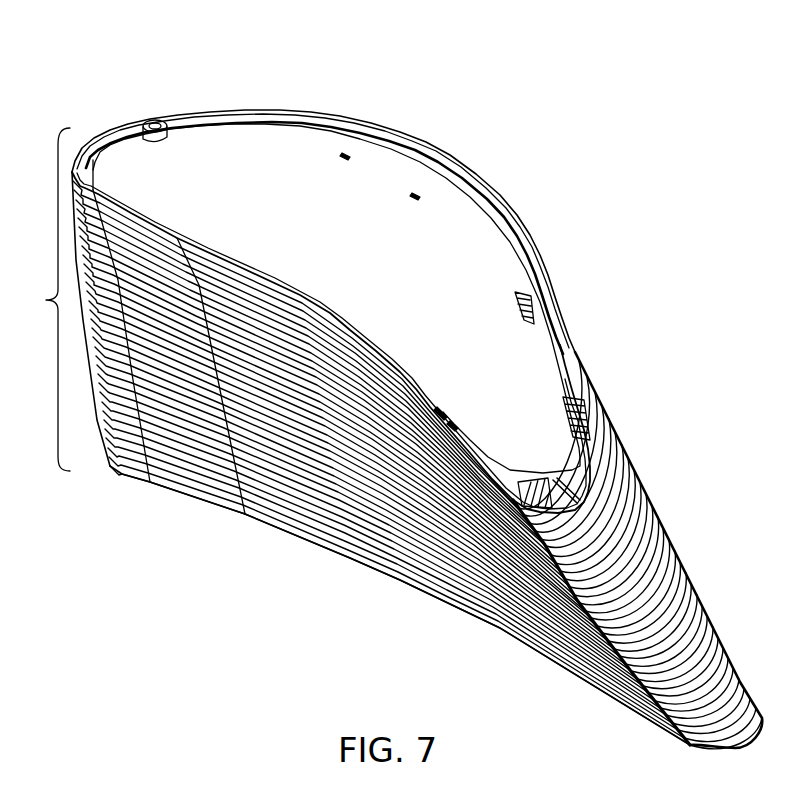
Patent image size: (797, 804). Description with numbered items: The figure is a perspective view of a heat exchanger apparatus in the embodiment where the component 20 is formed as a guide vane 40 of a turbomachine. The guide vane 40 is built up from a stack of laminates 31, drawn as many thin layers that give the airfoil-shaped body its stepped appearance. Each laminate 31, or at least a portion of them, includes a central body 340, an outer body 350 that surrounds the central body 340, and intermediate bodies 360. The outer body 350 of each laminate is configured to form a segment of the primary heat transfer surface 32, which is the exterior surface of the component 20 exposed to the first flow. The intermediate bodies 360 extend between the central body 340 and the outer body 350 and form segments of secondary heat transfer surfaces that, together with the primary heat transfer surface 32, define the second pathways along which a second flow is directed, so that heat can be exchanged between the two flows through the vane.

The component 20 is at (173, 84).
The laminates 31 is at (129, 321).
The primary heat transfer surface 32 is at (641, 618).
The guide vane 40 is at (311, 528).
The central body 340 is at (413, 294).
The outer body 350 is at (573, 353).
The intermediate bodies 360 is at (541, 479).